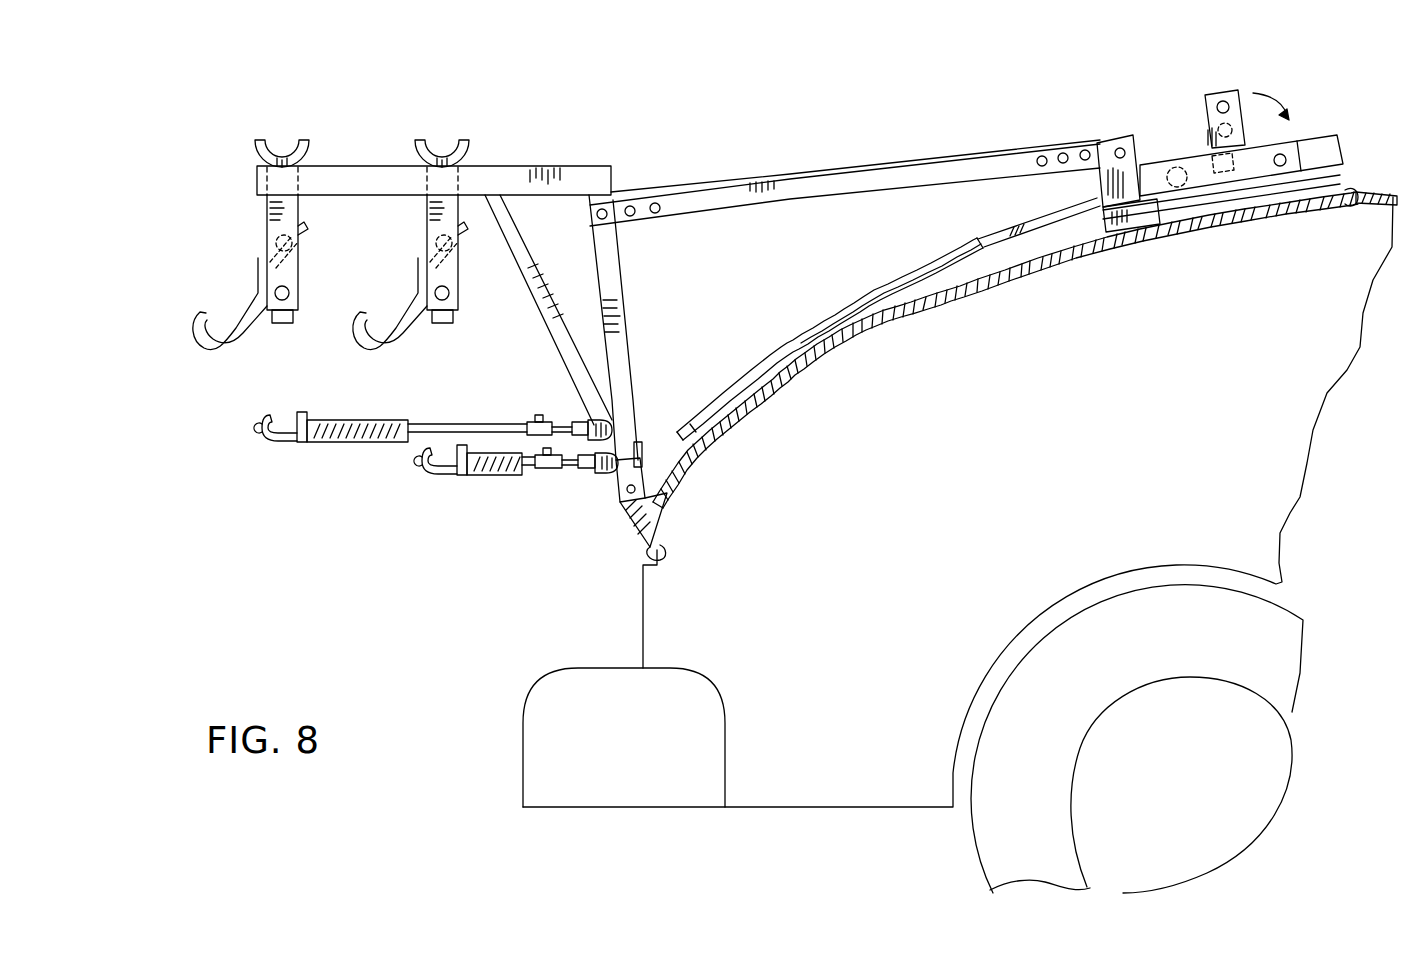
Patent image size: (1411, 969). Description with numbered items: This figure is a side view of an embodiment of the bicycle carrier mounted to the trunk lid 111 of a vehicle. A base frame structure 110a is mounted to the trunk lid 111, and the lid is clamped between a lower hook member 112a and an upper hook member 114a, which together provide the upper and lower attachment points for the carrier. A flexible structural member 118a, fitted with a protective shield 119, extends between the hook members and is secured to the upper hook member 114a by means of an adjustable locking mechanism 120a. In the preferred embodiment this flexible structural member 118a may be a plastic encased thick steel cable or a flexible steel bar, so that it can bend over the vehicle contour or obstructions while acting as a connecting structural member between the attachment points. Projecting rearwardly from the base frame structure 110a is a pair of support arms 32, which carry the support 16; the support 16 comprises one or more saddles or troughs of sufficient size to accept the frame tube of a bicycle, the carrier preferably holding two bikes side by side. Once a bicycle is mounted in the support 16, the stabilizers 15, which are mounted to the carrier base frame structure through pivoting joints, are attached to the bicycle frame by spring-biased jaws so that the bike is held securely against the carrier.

The stabilizers 15 is at (330, 467).
The support 16 is at (313, 124).
The support arms 32 is at (257, 197).
The base frame structure 110a is at (583, 162).
The trunk lid 111 is at (873, 552).
The lower hook member 112a is at (643, 552).
The upper hook member 114a is at (1357, 212).
The flexible structural member 118a is at (1018, 244).
The protective shield 119 is at (833, 318).
The adjustable locking mechanism 120a is at (1262, 36).